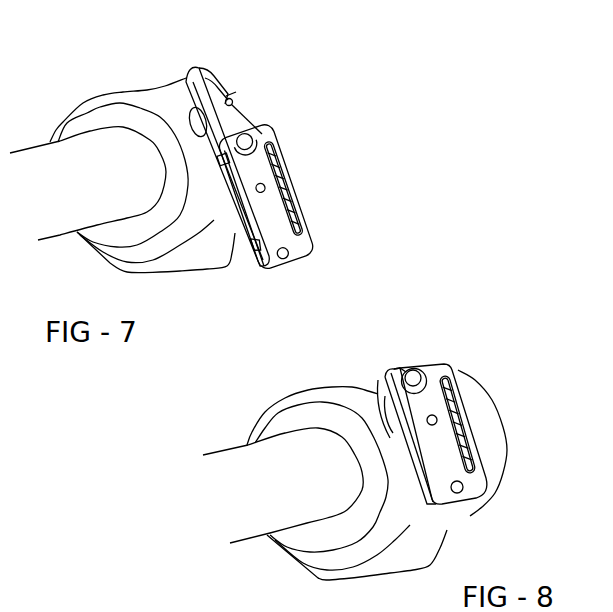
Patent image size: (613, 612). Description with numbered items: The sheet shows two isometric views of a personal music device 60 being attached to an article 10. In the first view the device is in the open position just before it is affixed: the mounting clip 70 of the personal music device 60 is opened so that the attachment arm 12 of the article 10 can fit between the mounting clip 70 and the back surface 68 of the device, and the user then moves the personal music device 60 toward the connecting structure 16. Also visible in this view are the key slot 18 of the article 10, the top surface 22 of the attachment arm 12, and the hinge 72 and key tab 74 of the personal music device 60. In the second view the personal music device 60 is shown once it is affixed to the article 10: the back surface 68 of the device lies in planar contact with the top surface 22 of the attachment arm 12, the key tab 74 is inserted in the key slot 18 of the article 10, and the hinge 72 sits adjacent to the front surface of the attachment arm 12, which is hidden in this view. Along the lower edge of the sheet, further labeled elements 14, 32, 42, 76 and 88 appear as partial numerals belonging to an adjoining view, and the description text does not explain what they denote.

In FIG. 7, the article 10 is at (186, 62).
In FIG. 8, the article 10 is at (383, 348).
In FIG. 7, the attachment arm 12 is at (228, 90).
In FIG. 8, the attachment arm 12 is at (394, 370).
In FIG. 7, the housing 14 is at (87, 611).
In FIG. 7, the connecting structure 16 is at (217, 75).
In FIG. 7, the key slot 18 is at (225, 100).
In FIG. 7, the top surface 22 is at (247, 127).
In FIG. 8, the top surface 22 is at (428, 457).
In FIG. 7, the connector 32 is at (164, 611).
In FIG. 7, the coupling 42 is at (123, 611).
In FIG. 7, the personal music device 60 is at (304, 180).
In FIG. 8, the personal music device 60 is at (463, 399).
In FIG. 7, the back surface 68 is at (248, 200).
In FIG. 8, the back surface 68 is at (418, 446).
In FIG. 7, the mounting clip 70 is at (247, 218).
In FIG. 7, the hinge 72 is at (260, 243).
In FIG. 7, the key tab 74 is at (226, 158).
In FIG. 7, the cable 76 is at (56, 611).
In FIG. 8, the fitting 88 is at (264, 604).